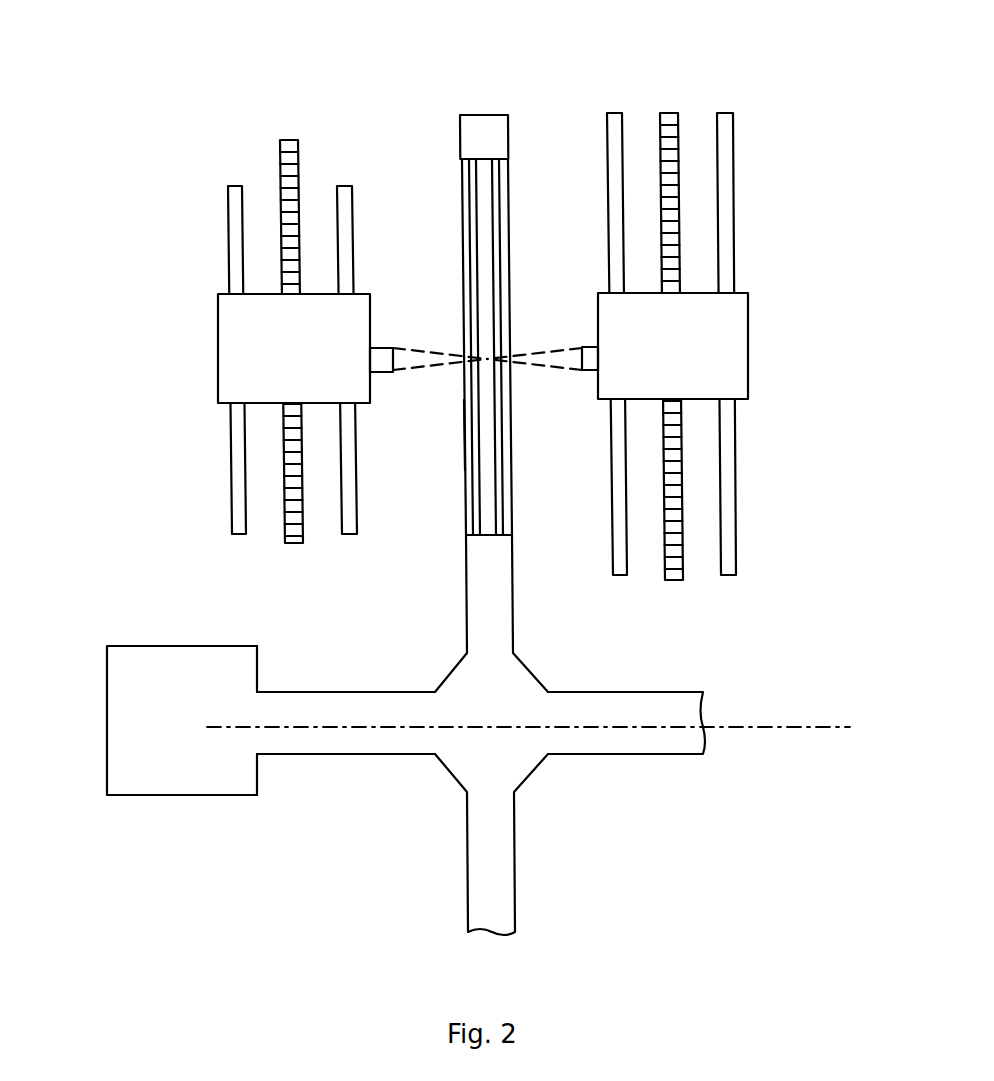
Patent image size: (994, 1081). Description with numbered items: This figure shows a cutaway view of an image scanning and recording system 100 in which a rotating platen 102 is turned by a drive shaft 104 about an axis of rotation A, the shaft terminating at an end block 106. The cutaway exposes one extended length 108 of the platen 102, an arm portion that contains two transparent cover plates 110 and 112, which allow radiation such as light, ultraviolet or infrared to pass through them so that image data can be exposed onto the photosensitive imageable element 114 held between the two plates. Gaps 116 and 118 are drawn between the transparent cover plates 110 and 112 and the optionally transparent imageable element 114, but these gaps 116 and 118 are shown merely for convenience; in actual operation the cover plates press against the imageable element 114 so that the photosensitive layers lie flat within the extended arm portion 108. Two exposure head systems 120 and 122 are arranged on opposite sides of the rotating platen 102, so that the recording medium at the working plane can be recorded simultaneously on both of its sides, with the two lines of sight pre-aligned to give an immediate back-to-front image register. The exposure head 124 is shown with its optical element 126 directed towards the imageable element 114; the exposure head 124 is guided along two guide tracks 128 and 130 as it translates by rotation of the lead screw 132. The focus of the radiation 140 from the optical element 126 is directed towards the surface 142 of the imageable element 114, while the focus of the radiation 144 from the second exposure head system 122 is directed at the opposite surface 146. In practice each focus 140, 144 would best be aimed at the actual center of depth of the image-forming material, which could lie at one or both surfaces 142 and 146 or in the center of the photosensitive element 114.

The sensor assembly 100 is at (812, 634).
The rotating platen 102 is at (510, 622).
The drive shaft 104 is at (668, 698).
The end block of housing 106 is at (162, 767).
The extended length of the platen 108 is at (404, 165).
The transparent cover plate 110 is at (510, 183).
The transparent cover plate 112 is at (470, 235).
The photosensitive imageable element 114 is at (487, 251).
The gap 116 is at (512, 418).
The gap 118 is at (465, 440).
The exposure head system 120 is at (706, 298).
The exposure head system 122 is at (162, 320).
The exposure head 124 is at (720, 343).
The optical element 126 is at (596, 346).
The guide track 128 is at (723, 120).
The guide track 130 is at (613, 118).
The lead screw 132 is at (665, 112).
The focus of the radiation 140 is at (556, 366).
The surface of the imageable element 142 is at (508, 358).
The focus of the radiation 144 is at (413, 367).
The surface of the photosensitive element 146 is at (463, 363).